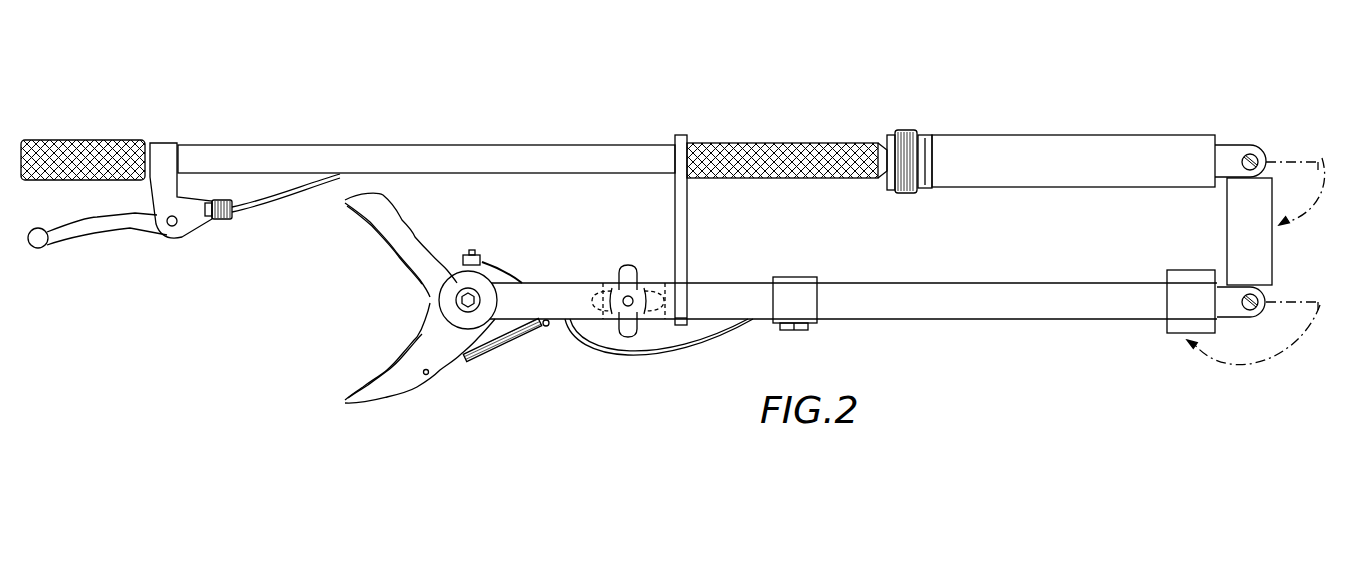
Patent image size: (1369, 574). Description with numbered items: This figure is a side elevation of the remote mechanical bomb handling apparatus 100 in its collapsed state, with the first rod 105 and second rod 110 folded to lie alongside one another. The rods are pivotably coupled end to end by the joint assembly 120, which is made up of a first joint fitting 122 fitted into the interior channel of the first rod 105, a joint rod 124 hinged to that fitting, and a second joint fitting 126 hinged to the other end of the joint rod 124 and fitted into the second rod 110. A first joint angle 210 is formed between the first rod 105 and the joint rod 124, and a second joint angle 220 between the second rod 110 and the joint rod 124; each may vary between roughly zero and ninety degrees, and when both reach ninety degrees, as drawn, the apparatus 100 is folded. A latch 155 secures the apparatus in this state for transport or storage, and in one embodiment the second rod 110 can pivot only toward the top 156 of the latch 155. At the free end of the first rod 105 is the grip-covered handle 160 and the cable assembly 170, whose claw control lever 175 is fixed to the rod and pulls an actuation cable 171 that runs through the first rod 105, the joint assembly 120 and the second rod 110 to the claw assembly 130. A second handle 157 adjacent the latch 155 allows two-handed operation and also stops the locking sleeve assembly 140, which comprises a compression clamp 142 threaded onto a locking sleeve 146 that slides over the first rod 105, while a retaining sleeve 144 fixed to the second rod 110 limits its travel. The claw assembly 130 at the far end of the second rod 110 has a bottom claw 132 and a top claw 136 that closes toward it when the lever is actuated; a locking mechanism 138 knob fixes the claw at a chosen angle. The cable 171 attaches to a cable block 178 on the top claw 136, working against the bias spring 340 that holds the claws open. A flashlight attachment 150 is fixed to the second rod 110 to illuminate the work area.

The apparatus 100 is at (627, 395).
The first rod 105 is at (432, 145).
The second rod 110 is at (958, 318).
The joint assembly 120 is at (1282, 256).
The first joint fitting 122 is at (1240, 145).
The joint rod 124 is at (1227, 225).
The second joint fitting 126 is at (1235, 318).
The claw assembly 130 is at (445, 405).
The bottom claw 132 is at (348, 204).
The top claw 136 is at (357, 405).
The locking mechanism 138 is at (628, 265).
The locking sleeve assembly 140 is at (1197, 105).
The compression clamp 142 is at (903, 130).
The retaining sleeve 144 is at (1177, 272).
The locking sleeve 146 is at (990, 135).
The flashlight attachment 150 is at (796, 278).
The latch 155 is at (676, 135).
The top 156 is at (683, 328).
The second handle 157 is at (773, 143).
The handle 160 is at (80, 140).
The cable assembly 170 is at (70, 258).
The actuation cable 171 is at (287, 195).
The claw control lever 175 is at (98, 227).
The cable block 178 is at (480, 258).
The first joint angle 210 is at (1328, 172).
The second joint angle 220 is at (1282, 363).
The bias spring 340 is at (503, 348).